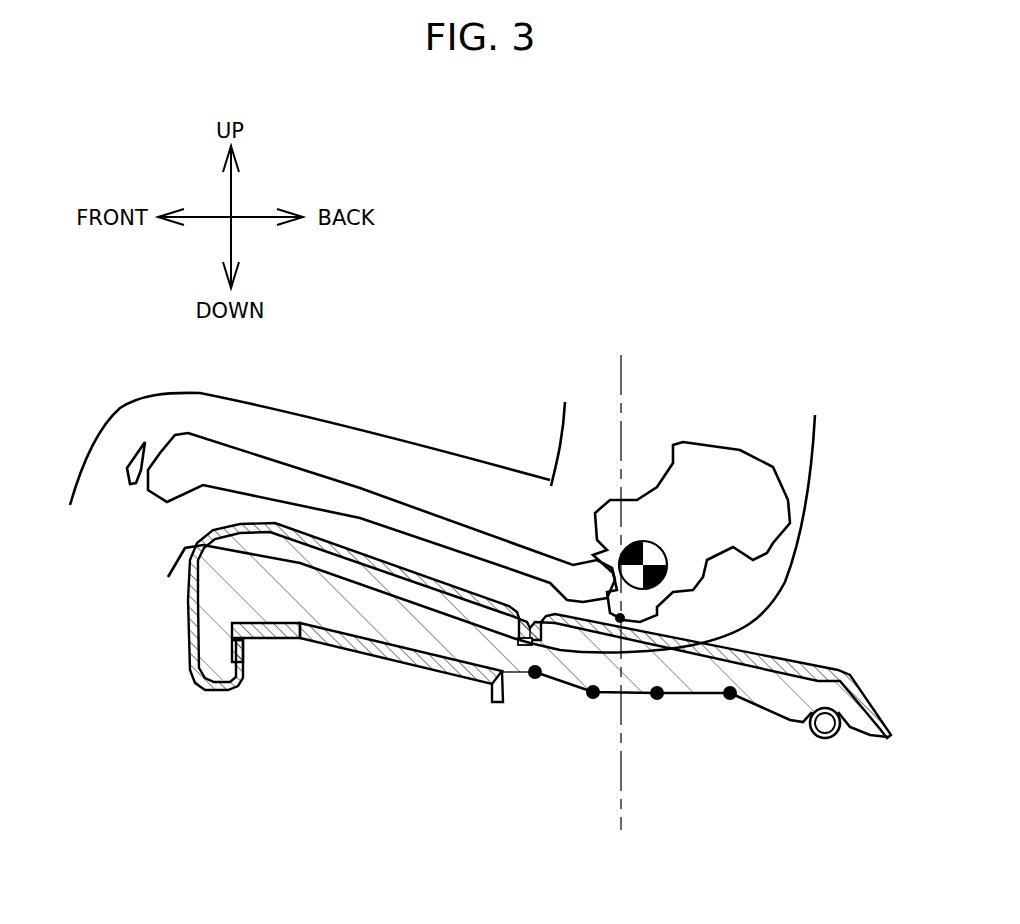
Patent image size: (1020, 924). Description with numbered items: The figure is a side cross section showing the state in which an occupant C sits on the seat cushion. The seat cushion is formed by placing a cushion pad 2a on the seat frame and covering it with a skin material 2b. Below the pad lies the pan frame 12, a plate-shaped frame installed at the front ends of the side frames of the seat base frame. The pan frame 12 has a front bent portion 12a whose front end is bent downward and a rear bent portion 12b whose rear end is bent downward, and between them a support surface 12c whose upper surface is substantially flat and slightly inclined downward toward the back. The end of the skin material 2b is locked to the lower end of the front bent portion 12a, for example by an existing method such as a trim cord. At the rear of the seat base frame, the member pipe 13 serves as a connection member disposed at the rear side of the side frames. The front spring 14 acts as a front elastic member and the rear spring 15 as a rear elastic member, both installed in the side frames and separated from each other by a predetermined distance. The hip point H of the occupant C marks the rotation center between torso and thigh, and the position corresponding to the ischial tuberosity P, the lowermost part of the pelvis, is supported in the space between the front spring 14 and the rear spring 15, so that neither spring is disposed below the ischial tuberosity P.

The cushion pad 2a is at (253, 593).
The skin material 2b is at (190, 653).
The pan frame 12 is at (367, 737).
The front bent portion 12a is at (237, 643).
The rear bent portion 12b is at (465, 729).
The support surface 12c is at (392, 650).
The member pipe 13 is at (827, 740).
The front spring 14 is at (590, 699).
The rear spring 15 is at (660, 700).
The occupant C is at (797, 450).
The hip point H is at (643, 565).
The ischial tuberosity P is at (620, 618).